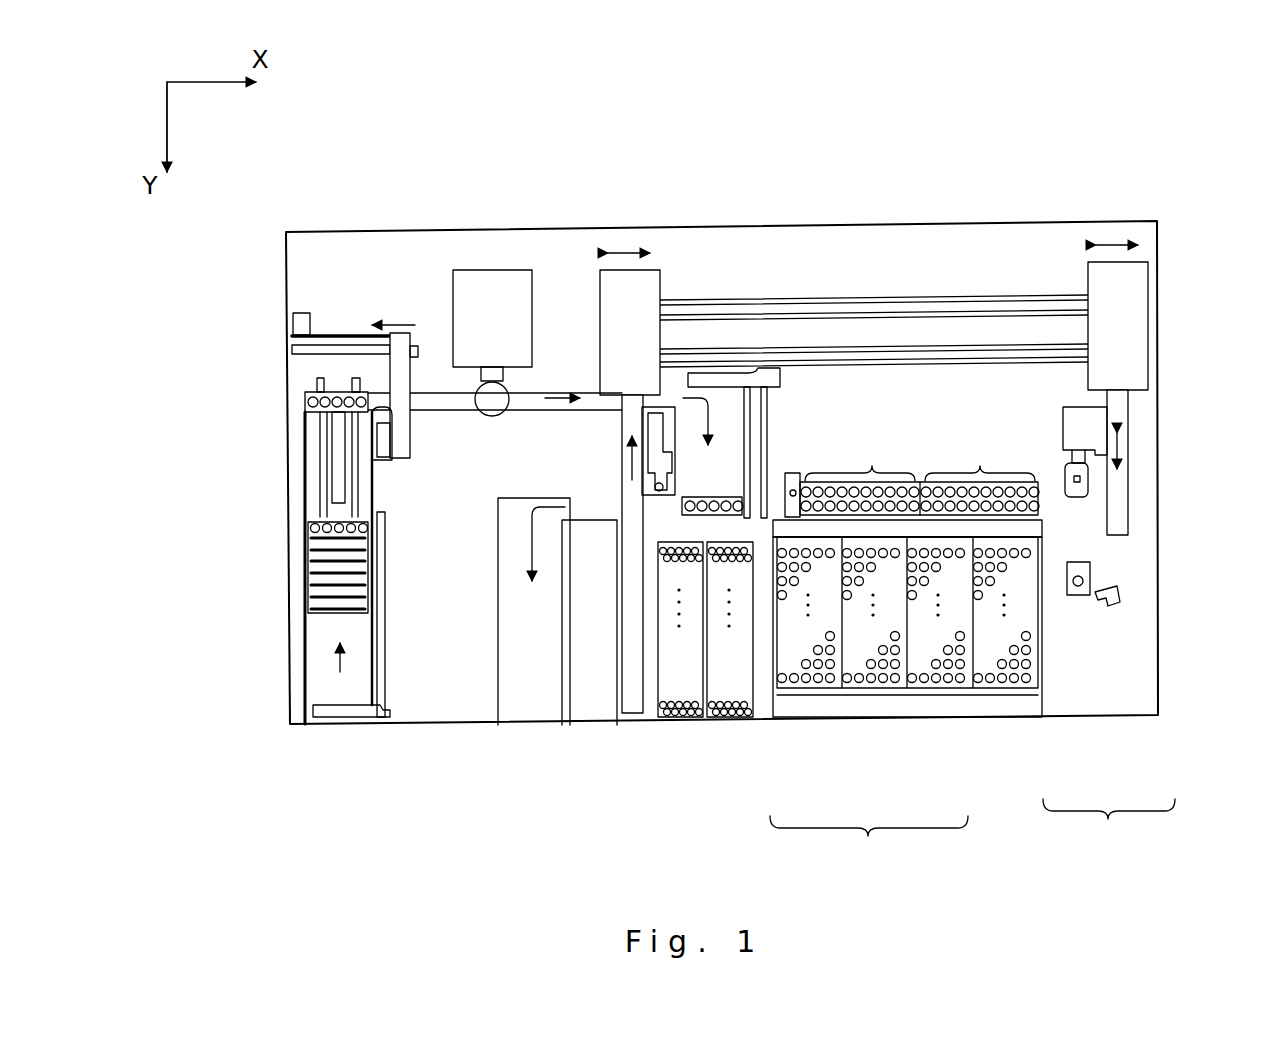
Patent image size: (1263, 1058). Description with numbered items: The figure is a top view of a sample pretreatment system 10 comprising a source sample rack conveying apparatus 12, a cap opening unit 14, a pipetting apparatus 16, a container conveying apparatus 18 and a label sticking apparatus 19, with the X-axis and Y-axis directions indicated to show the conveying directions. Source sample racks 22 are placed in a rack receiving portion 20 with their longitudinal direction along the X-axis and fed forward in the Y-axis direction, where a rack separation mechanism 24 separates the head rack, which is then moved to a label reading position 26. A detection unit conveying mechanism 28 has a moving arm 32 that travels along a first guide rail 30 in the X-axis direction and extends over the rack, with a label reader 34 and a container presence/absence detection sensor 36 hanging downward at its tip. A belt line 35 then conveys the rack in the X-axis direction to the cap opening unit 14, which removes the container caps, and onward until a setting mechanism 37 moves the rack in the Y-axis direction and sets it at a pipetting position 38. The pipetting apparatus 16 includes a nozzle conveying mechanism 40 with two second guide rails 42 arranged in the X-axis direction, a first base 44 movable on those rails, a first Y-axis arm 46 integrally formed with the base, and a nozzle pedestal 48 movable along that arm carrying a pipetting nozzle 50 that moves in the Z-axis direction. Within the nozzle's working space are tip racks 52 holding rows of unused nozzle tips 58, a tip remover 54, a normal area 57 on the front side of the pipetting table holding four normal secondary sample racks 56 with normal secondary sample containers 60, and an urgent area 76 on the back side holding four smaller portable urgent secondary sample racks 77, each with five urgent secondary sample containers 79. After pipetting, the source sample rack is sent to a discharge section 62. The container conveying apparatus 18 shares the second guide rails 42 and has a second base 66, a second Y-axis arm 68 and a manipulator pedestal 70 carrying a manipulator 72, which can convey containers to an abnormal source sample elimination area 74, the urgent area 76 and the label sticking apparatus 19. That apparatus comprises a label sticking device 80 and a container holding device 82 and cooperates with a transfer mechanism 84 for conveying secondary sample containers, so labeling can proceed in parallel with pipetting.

The sample pretreatment system 10 is at (295, 762).
The source sample rack conveying apparatus 12 is at (440, 682).
The cap opening unit 14 is at (493, 266).
The pipetting apparatus 16 is at (770, 260).
The container conveying apparatus 18 is at (1077, 273).
The label sticking apparatus 19 is at (1109, 822).
The rack receiving portion 20 is at (322, 665).
The source sample racks 22 is at (315, 592).
The rack separation mechanism 24 is at (333, 462).
The label reading position 26 is at (308, 400).
The detection unit conveying mechanism 28 is at (350, 304).
The first guide rail 30 is at (343, 330).
The moving arm 32 is at (400, 417).
The label reader 34 is at (380, 460).
The belt line 35 is at (437, 400).
The container presence/absence detection sensor 36 is at (413, 452).
The setting mechanism 37 is at (775, 398).
The pipetting position 38 is at (768, 438).
The nozzle conveying mechanism 40 is at (683, 276).
The second guide rails 42 is at (868, 300).
The first base 44 is at (600, 293).
The first Y-axis arm 46 is at (624, 417).
The nozzle pedestal 48 is at (650, 462).
The pipetting nozzle 50 is at (650, 463).
The tip racks 52 is at (693, 653).
The tip remover 54 is at (792, 474).
The normal secondary sample racks 56 is at (803, 623).
The normal area 57 is at (869, 842).
The unused nozzle tips 58 is at (645, 716).
The normal secondary sample containers 60 is at (1037, 690).
The discharge section 62 is at (530, 700).
The second base 66 is at (1149, 306).
The second Y-axis arm 68 is at (1128, 448).
The manipulator pedestal 70 is at (1092, 420).
The manipulator 72 is at (1090, 487).
The abnormal source sample elimination area 74 is at (873, 467).
The urgent area 76 is at (980, 458).
The urgent secondary sample racks 77 is at (1030, 481).
The urgent secondary sample containers 79 is at (1038, 515).
The label sticking device 80 is at (1068, 597).
The container holding device 82 is at (1082, 595).
The transfer mechanism 84 is at (1110, 607).